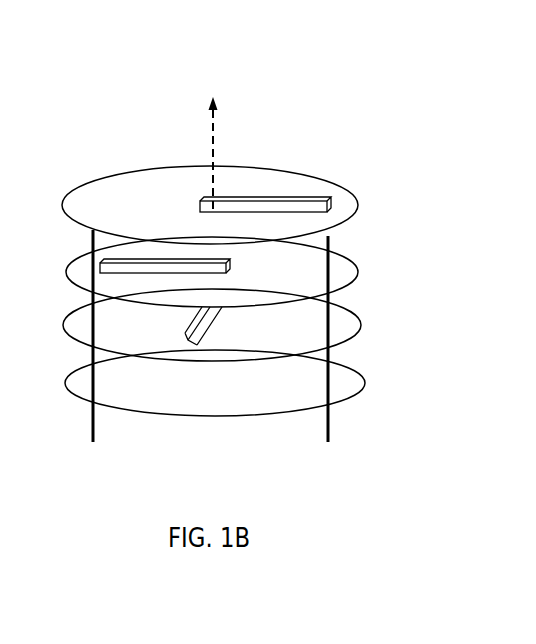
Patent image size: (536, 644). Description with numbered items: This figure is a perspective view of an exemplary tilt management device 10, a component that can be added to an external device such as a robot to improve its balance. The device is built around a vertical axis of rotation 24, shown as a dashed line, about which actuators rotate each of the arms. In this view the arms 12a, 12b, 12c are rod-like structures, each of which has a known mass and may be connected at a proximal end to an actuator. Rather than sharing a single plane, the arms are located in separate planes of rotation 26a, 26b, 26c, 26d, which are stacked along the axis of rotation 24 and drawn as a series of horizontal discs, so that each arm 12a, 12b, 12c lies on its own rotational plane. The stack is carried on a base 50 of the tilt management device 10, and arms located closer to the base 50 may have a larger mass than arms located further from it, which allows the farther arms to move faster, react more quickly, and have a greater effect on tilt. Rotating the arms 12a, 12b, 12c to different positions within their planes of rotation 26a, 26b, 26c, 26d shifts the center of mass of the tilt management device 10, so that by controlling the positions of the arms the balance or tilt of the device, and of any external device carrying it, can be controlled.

The tilt management device 10 is at (147, 123).
The arm 12a is at (330, 204).
The arm 12b is at (100, 268).
The arm 12c is at (194, 348).
The axis of rotation 24 is at (214, 138).
The plane of rotation 26a is at (102, 201).
The plane of rotation 26b is at (72, 258).
The plane of rotation 26c is at (357, 323).
The plane of rotation 26d is at (362, 379).
The base 50 is at (211, 447).